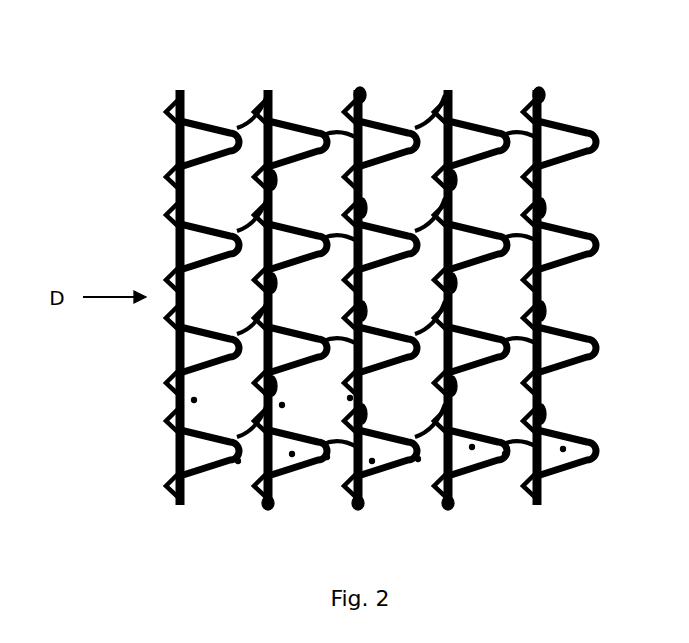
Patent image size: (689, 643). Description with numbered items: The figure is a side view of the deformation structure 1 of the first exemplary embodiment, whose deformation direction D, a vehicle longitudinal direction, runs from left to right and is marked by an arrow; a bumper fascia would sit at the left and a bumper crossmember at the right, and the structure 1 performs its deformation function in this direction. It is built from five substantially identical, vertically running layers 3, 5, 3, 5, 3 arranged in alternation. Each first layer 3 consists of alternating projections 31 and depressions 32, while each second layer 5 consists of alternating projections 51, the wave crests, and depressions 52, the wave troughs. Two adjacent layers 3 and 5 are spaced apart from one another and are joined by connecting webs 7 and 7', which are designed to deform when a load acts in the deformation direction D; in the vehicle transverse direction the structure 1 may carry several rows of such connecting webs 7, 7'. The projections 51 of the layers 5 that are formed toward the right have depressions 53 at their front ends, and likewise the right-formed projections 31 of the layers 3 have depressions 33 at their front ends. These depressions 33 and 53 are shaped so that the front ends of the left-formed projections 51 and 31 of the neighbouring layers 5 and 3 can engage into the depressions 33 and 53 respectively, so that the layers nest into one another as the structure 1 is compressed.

The deformation structure 1 is at (80, 157).
The first layer 3 is at (200, 85).
The second layer 5 is at (300, 100).
The connecting web 7 is at (388, 252).
The connecting web 7' is at (376, 242).
The projection 31 is at (350, 398).
The depression 32 is at (195, 400).
The depression 33 is at (350, 205).
The projection 51 is at (265, 393).
The depression 52 is at (282, 405).
The depression 53 is at (265, 180).